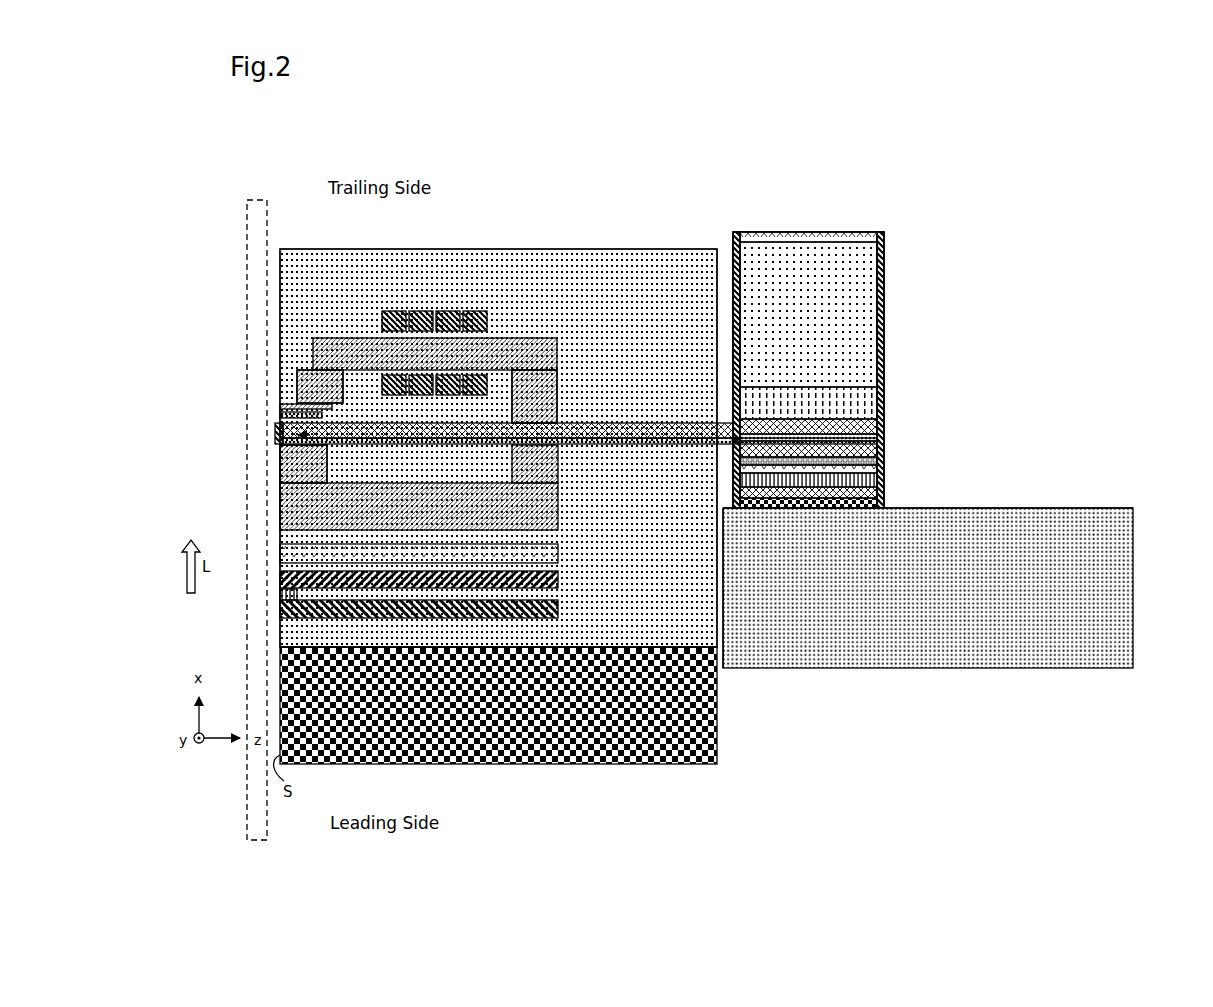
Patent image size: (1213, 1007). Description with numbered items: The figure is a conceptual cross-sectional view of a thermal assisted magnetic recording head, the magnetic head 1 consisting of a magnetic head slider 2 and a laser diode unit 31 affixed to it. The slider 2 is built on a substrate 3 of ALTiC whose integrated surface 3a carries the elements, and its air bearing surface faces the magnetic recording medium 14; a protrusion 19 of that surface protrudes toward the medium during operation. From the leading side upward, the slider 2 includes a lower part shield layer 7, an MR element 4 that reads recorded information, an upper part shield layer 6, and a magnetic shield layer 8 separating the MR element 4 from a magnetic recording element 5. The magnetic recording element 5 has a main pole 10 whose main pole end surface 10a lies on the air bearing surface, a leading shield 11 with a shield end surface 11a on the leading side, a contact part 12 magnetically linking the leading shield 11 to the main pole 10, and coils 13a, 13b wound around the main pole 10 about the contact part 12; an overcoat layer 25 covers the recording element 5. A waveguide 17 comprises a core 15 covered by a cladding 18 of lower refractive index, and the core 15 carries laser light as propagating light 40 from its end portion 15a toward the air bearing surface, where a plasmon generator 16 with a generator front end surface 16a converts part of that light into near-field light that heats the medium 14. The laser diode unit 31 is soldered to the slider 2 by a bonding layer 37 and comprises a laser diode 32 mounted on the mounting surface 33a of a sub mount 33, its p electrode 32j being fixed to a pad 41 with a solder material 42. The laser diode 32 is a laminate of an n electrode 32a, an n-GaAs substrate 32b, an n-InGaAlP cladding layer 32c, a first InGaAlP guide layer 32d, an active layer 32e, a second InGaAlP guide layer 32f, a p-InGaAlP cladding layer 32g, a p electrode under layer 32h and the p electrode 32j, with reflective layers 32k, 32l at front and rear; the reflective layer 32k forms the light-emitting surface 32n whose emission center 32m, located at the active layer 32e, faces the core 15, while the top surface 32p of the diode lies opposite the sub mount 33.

The magnetic head 1 is at (588, 126).
The magnetic head slider 2 is at (494, 245).
The substrate 3 is at (718, 702).
The integrated surface 3a is at (612, 646).
The MR element 4 is at (280, 593).
The magnetic recording element 5 is at (201, 422).
The upper part shield layer 6 is at (280, 578).
The lower part shield layer 7 is at (280, 610).
The magnetic shield layer 8 is at (280, 553).
The main pole 10 is at (286, 366).
The main pole end surface 10a is at (280, 405).
The leading shield 11 is at (265, 461).
The shield end surface 11a is at (280, 470).
The contact part 12 is at (560, 392).
The coil 13a is at (395, 310).
The coil 13b is at (392, 377).
The magnetic recording medium 14 is at (255, 262).
The core 15 is at (593, 422).
The end portion 15a is at (728, 446).
The plasmon generator 16 is at (322, 415).
The generator front end surface 16a is at (280, 414).
The waveguide 17 is at (619, 400).
The cladding 18 is at (444, 417).
The protrusion 19 is at (275, 433).
The overcoat layer 25 is at (652, 287).
The laser diode unit 31 is at (865, 208).
The laser diode 32 is at (946, 326).
The n electrode 32a is at (880, 238).
The n-GaAs substrate 32b is at (877, 302).
The n-InGaAlP cladding layer 32c is at (880, 398).
The first InGaAlP guide layer 32d is at (880, 420).
The active layer 32e is at (880, 437).
The second InGaAlP guide layer 32f is at (884, 447).
The p-InGaAlP cladding layer 32g is at (884, 462).
The p electrode under layer 32h is at (884, 470).
The p electrode 32j is at (884, 482).
The reflective layer 32k is at (735, 238).
The reflective layer 32l is at (884, 278).
The emission center 32m is at (735, 432).
The light-emitting surface 32n is at (735, 318).
The top surface 32p is at (820, 232).
The sub mount 33 is at (1127, 594).
The mounting surface 33a is at (1049, 508).
The bonding layer 37 is at (724, 610).
The propagating light 40 is at (388, 445).
The pad 41 is at (728, 504).
The solder material 42 is at (728, 494).